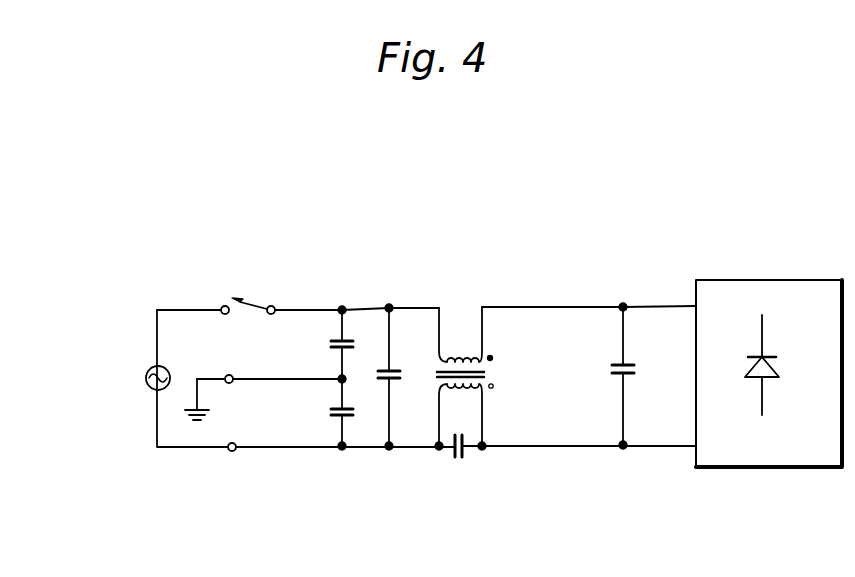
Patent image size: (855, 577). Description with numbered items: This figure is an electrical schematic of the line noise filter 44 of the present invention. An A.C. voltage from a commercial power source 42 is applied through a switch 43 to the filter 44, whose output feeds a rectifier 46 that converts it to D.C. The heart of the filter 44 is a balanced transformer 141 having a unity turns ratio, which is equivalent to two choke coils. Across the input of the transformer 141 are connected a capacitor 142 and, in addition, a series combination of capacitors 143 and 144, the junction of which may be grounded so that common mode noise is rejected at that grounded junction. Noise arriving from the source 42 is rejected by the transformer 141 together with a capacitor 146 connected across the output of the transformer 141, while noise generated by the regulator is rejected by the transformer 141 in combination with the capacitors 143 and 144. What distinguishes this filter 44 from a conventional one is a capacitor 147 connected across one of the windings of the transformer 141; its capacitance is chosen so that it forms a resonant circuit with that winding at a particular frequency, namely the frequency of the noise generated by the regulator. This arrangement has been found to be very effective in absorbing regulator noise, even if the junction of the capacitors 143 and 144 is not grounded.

The commercial power source 42 is at (146, 376).
The switch 43 is at (250, 303).
The line noise filter 44 is at (486, 222).
The rectifier 46 is at (767, 280).
The balanced transformer 141 is at (496, 373).
The capacitor 142 is at (371, 372).
The capacitor 143 is at (330, 343).
The capacitor 144 is at (330, 411).
The capacitor 146 is at (610, 367).
The capacitor 147 is at (460, 459).